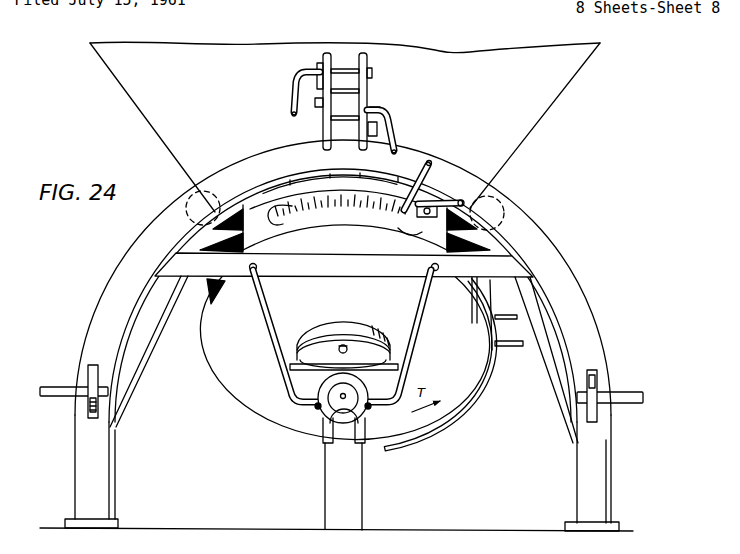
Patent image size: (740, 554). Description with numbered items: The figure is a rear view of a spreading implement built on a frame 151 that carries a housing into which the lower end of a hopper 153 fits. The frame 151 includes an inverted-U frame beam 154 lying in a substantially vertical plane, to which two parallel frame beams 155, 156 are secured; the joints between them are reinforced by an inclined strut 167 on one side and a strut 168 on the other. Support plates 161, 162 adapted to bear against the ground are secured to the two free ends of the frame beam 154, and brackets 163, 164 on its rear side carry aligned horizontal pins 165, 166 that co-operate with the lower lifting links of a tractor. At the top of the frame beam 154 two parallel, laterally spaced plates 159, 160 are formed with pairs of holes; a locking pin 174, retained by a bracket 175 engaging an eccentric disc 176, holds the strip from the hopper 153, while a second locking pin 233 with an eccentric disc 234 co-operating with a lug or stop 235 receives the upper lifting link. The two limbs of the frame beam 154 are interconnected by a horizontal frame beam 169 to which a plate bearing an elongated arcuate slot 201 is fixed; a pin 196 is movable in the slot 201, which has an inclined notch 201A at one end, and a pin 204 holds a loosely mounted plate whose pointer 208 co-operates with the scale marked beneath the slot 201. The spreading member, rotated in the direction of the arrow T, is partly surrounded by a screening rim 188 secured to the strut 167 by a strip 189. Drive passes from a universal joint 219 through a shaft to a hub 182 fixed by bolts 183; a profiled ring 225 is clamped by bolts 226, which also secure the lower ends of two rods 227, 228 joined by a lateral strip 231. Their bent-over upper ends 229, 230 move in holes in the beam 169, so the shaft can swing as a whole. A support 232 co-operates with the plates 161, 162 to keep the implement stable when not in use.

The frame 151 is at (532, 228).
The hopper 153 is at (545, 98).
The frame beam 154 is at (592, 312).
The frame beam 155 is at (500, 200).
The frame beam 156 is at (195, 192).
The plate 159 is at (327, 50).
The plate 160 is at (364, 50).
The support plate 161 is at (78, 520).
The support plate 162 is at (600, 524).
The bracket 163 is at (88, 370).
The bracket 164 is at (598, 382).
The horizontal pin 165 is at (72, 396).
The horizontal pin 166 is at (630, 406).
The inclined strut 167 is at (558, 398).
The strut 168 is at (134, 375).
The horizontal frame beam 169 is at (318, 272).
The locking pin 174 is at (372, 76).
The bracket 175 is at (306, 112).
The eccentric disc 176 is at (316, 66).
The hub 182 is at (378, 326).
The bolts 183 is at (345, 345).
The screening rim 188 is at (415, 442).
The strip 189 is at (515, 347).
The pin 196 is at (432, 172).
The elongated arcuate slot 201 is at (293, 207).
The notch 201A is at (270, 226).
The pin 204 is at (443, 200).
The pointer 208 is at (418, 234).
The universal joint 219 is at (322, 442).
The profiled ring 225 is at (316, 410).
The bolts 226 is at (370, 410).
The rod 227 is at (268, 330).
The rod 228 is at (418, 337).
The bent-over upper end 229 is at (253, 272).
The bent-over upper end 230 is at (437, 273).
The lateral strip 231 is at (289, 382).
The support 232 is at (324, 506).
The locking pin 233 is at (388, 116).
The eccentric disc 234 is at (376, 107).
The lug or stop 235 is at (380, 128).